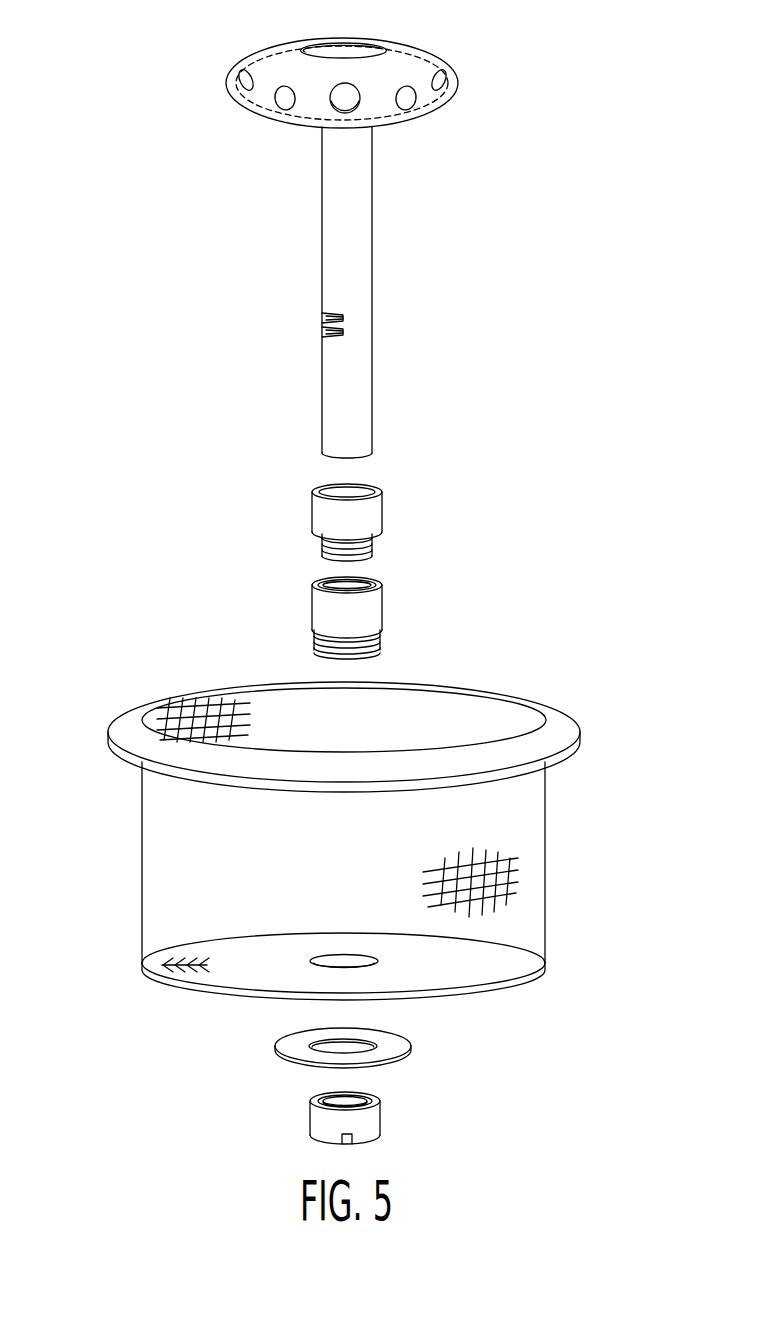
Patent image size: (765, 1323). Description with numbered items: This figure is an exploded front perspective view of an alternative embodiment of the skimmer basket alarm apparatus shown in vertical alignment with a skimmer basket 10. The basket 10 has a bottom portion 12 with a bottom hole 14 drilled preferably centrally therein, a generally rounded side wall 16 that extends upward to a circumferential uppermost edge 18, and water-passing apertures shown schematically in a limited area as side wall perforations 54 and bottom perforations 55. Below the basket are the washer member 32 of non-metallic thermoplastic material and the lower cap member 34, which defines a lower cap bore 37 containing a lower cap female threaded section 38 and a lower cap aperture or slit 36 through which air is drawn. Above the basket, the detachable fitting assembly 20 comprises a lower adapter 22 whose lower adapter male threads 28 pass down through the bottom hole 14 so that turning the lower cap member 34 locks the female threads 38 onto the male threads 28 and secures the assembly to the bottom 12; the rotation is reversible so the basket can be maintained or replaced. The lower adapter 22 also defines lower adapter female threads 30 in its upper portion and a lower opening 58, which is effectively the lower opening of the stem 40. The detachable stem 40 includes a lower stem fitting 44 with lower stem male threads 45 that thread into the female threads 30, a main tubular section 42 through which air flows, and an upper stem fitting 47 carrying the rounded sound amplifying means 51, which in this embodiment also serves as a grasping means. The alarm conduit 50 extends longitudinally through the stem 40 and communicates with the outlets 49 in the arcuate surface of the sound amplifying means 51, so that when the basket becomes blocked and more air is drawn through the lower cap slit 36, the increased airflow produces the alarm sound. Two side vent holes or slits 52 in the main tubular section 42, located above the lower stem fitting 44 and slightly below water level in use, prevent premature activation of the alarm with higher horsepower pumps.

The skimmer basket 10 is at (347, 835).
The bottom portion 12 is at (294, 969).
The bottom hole 14 is at (335, 963).
The side wall 16 is at (316, 874).
The uppermost edge 18 is at (565, 722).
The detachable fitting assembly 20 is at (398, 588).
The lower adapter 22 is at (358, 627).
The lower adapter male threads 28 is at (362, 648).
The lower adapter female threads 30 is at (362, 590).
The washer member 32 is at (398, 1048).
The lower cap member 34 is at (352, 1117).
The lower cap apertures 36 is at (346, 1140).
The lower cap bore 37 is at (335, 1098).
The lower cap female threaded section 38 is at (358, 1098).
The detachable stem 40 is at (372, 234).
The main tubular section 42 is at (348, 298).
The lower stem fitting 44 is at (340, 525).
The lower stem male threads 45 is at (342, 553).
The upper stem fitting 47 is at (372, 94).
The outlets 49 is at (282, 100).
The alarm conduit 50 is at (305, 44).
The sound amplifying means 51 is at (438, 62).
The side vent holes or slits 52 is at (322, 316).
The side wall perforations 54 is at (185, 715).
The bottom perforations 55 is at (175, 962).
The lower opening 58 is at (345, 458).